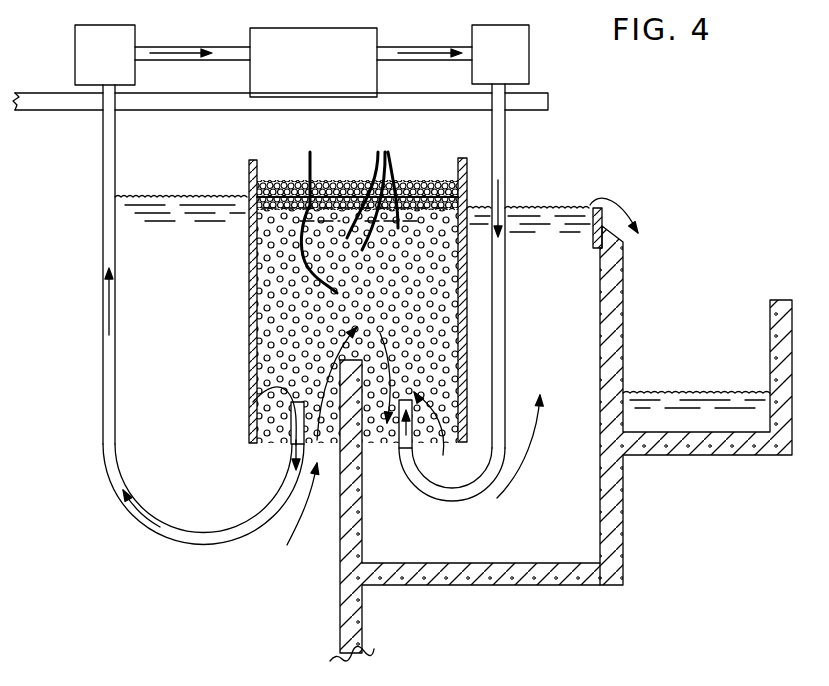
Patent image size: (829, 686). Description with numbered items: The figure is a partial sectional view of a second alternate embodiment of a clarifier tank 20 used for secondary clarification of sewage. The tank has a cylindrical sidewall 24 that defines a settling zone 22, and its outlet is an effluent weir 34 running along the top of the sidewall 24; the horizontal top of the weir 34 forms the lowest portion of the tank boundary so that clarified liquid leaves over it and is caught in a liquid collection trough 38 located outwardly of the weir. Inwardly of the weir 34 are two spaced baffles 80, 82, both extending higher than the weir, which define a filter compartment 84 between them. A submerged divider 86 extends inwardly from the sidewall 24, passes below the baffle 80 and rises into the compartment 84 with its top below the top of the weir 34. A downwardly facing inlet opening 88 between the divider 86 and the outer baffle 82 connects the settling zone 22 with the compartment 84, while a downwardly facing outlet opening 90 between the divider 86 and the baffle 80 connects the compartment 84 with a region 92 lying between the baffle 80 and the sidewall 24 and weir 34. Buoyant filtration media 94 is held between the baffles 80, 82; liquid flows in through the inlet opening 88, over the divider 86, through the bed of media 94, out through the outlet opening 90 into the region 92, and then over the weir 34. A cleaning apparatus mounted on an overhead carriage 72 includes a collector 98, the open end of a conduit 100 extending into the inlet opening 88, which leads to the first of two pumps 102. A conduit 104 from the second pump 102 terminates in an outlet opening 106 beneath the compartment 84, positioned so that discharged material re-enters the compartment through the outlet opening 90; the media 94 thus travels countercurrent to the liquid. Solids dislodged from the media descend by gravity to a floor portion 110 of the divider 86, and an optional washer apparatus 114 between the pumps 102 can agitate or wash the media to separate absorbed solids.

The clarifier tank 20 is at (387, 613).
The settling zone 22 is at (278, 613).
The sidewall 24 is at (623, 325).
The effluent weir 34 is at (612, 205).
The liquid collection trough 38 is at (697, 378).
The overhead carriage 72 is at (549, 91).
The baffle 80 is at (458, 170).
The baffle 82 is at (249, 172).
The filter compartment 84 is at (314, 211).
The submerged divider 86 is at (363, 508).
The inlet opening 88 is at (283, 430).
The outlet opening 90 is at (372, 423).
The region 92 is at (553, 243).
The buoyant filtration media 94 is at (372, 189).
The collector 98 is at (263, 396).
The conduit 100 is at (103, 440).
The pumps 102 is at (92, 71).
The conduit 104 is at (506, 290).
The outlet opening 106 is at (441, 433).
The floor portion 110 is at (528, 561).
The washer apparatus 114 is at (327, 76).